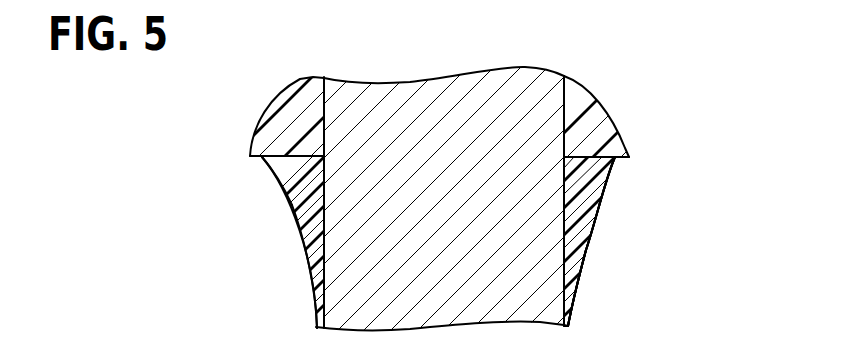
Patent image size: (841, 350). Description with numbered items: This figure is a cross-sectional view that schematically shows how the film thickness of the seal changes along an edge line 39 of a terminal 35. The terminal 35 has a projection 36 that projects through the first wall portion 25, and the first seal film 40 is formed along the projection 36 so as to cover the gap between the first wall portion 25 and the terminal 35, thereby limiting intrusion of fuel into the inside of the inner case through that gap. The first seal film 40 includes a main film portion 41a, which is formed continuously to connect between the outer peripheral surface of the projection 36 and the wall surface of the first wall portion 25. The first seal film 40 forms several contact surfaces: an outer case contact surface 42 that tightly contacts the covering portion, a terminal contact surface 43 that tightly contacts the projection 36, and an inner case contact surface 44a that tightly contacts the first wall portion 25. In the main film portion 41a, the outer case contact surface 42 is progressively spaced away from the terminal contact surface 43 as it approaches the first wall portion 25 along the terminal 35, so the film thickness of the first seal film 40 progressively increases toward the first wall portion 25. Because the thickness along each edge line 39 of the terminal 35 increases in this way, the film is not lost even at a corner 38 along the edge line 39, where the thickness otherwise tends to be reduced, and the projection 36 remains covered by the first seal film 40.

The inner case contact surface 44a is at (612, 133).
The first wall portion 25 is at (629, 157).
The first seal film 40 is at (580, 197).
The main film portion 41a is at (580, 197).
The terminal 35 is at (579, 236).
The projection 36 is at (579, 236).
The outer case contact surface 42 is at (578, 283).
The terminal contact surface 43 is at (562, 310).
The corner 38 is at (306, 172).
The edge line 39 is at (300, 228).